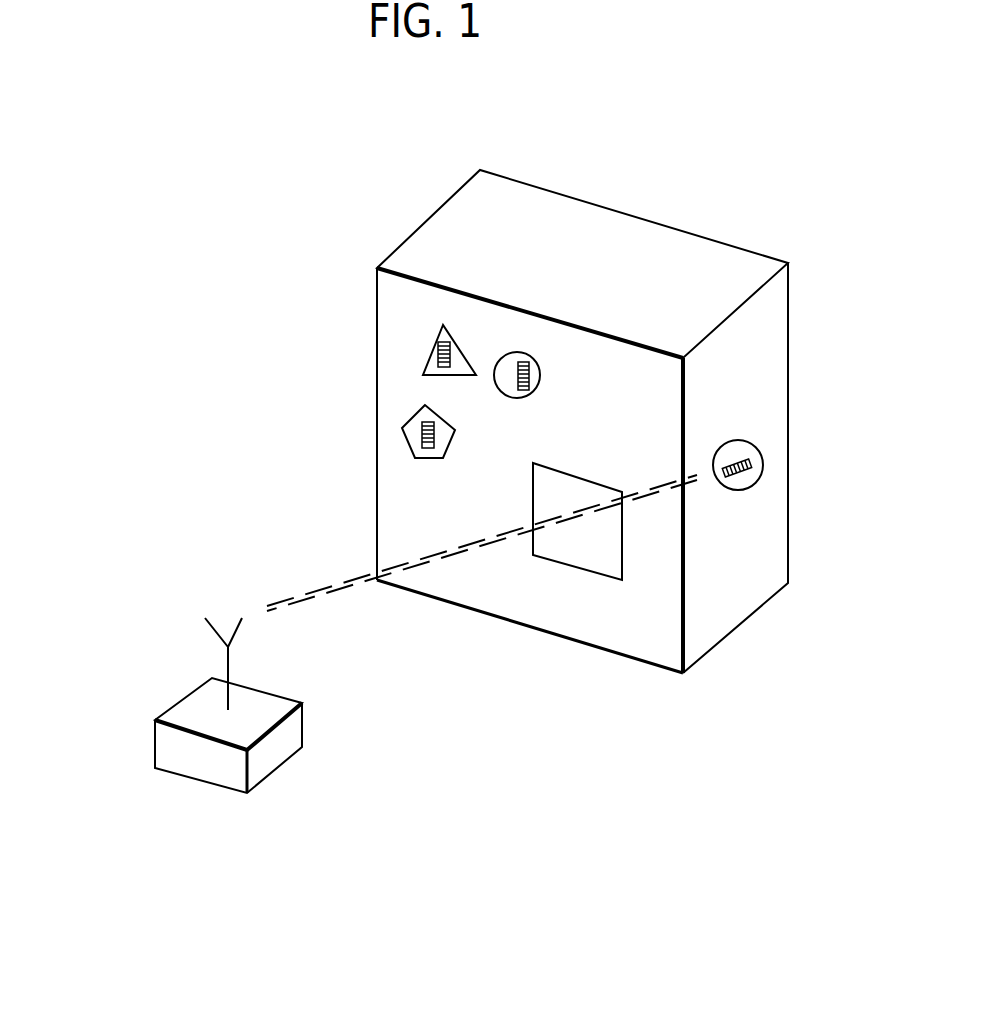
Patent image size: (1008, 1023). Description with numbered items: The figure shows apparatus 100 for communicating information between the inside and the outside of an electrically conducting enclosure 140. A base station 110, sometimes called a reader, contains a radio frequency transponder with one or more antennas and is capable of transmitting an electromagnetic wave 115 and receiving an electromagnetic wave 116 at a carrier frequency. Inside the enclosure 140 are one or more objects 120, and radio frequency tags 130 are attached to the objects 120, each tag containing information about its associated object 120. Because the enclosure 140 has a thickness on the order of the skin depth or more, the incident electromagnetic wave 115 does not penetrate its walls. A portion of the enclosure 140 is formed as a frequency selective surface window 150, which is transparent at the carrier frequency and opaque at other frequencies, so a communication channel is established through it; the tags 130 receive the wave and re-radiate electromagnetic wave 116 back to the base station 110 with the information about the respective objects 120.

The apparatus 100 is at (483, 730).
The base station 110 is at (178, 773).
The transmitted electromagnetic wave 115 is at (288, 602).
The received electromagnetic wave 116 is at (353, 597).
The objects 120 is at (440, 332).
The radio frequency tags 130 is at (433, 352).
The electrically conducting enclosure 140 is at (618, 230).
The frequency selective surface window 150 is at (598, 575).